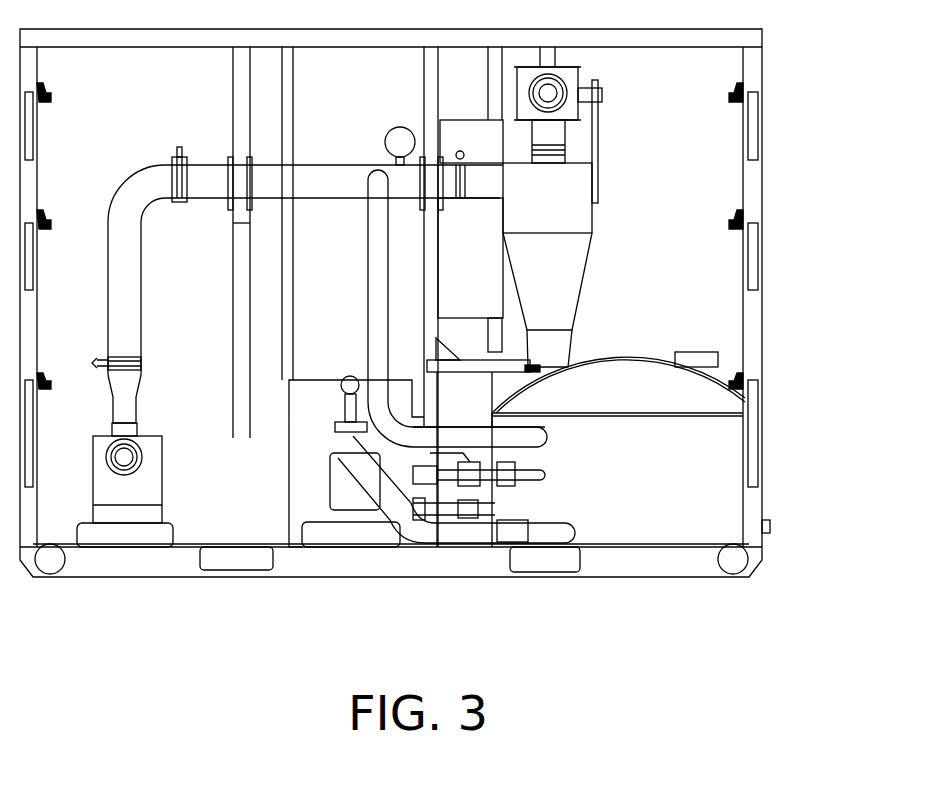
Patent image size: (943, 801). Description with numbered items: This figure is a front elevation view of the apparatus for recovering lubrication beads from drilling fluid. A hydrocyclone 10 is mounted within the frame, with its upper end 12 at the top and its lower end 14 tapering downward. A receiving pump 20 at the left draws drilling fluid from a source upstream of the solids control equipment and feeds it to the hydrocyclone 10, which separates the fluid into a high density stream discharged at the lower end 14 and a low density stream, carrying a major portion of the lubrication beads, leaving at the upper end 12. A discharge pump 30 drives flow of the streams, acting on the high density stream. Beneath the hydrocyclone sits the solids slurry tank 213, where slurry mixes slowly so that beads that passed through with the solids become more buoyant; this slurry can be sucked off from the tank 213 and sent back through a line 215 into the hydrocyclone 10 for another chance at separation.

The hydrocyclone 10 is at (552, 213).
The upper end 12 is at (552, 193).
The lower end 14 is at (550, 298).
The receiving pump 20 is at (125, 485).
The discharge pump 30 is at (349, 488).
The solids slurry tank 213 is at (714, 508).
The line 215 is at (528, 435).